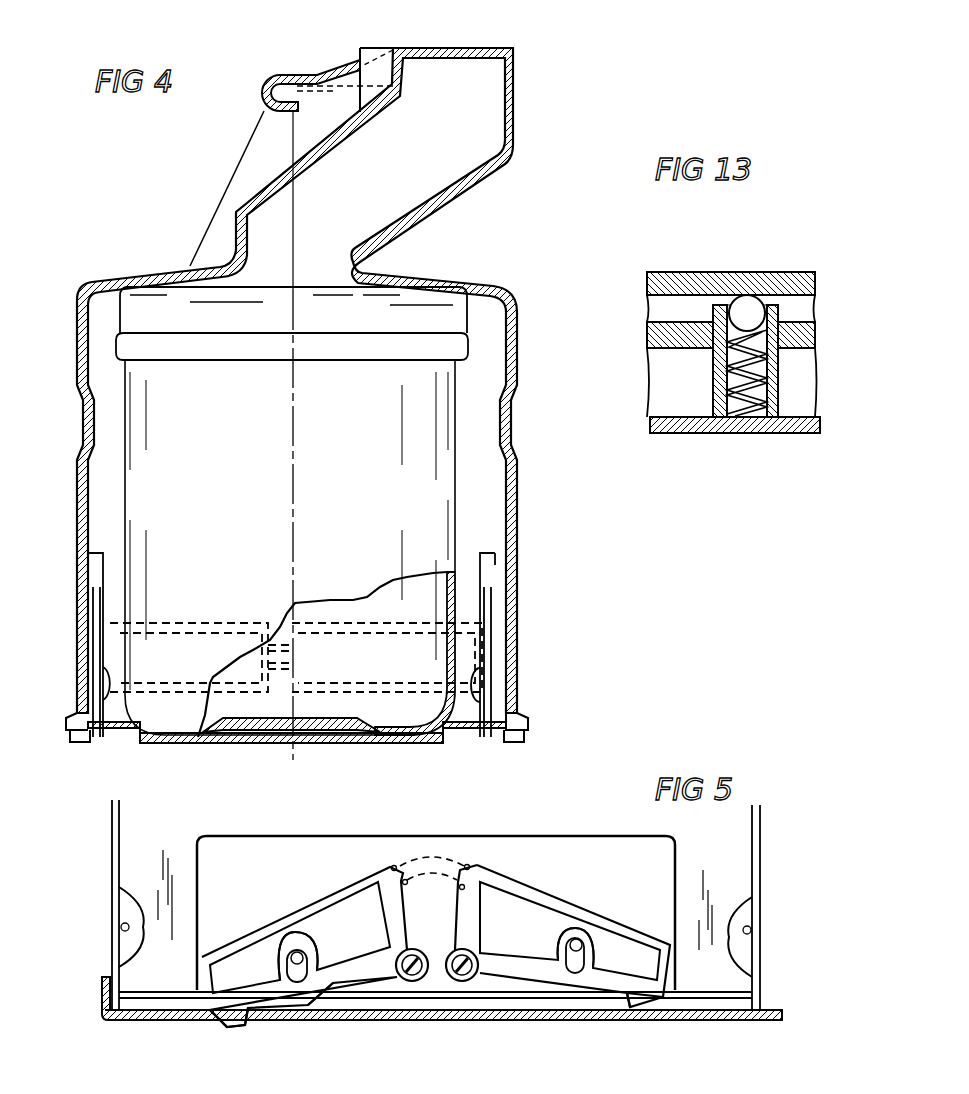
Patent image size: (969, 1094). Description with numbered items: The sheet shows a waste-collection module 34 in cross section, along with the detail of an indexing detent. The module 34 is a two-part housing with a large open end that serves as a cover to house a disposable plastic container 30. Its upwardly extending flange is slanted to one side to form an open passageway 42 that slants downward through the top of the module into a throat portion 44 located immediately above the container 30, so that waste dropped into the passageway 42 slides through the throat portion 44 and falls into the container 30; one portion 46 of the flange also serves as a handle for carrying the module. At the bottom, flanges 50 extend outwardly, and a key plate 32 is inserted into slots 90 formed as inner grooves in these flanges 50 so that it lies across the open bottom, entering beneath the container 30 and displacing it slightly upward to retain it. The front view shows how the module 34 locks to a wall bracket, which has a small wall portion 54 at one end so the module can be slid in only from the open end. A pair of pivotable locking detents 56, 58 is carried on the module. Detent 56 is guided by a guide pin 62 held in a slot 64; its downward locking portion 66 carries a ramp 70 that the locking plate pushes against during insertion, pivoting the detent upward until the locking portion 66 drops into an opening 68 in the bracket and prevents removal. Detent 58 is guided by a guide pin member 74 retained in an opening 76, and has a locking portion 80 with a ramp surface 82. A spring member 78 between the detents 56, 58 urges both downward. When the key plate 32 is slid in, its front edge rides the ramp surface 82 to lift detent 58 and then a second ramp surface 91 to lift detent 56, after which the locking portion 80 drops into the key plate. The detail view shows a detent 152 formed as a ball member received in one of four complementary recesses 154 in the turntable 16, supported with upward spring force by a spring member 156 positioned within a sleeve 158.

In FIG. 13, the turntable 16 is at (688, 280).
In FIG. 4, the plastic container 30 is at (455, 448).
In FIG. 4, the key plate 32 is at (258, 746).
In FIG. 4, the module 34 is at (505, 286).
In FIG. 5, the module 34 is at (762, 845).
In FIG. 4, the open passageway 42 is at (461, 62).
In FIG. 4, the throat portion 44 is at (270, 279).
In FIG. 4, the flange portion 46 is at (262, 105).
In FIG. 4, the flanges 50 is at (78, 718).
In FIG. 5, the wall portion 54 is at (100, 990).
In FIG. 5, the locking detent 56 is at (385, 878).
In FIG. 5, the locking detent 58 is at (485, 878).
In FIG. 5, the guide pin 62 is at (293, 950).
In FIG. 5, the slot 64 is at (273, 962).
In FIG. 5, the locking portion 66 is at (243, 1028).
In FIG. 5, the opening 68 is at (208, 1020).
In FIG. 5, the ramp 70 is at (225, 1027).
In FIG. 5, the guide pin member 74 is at (580, 950).
In FIG. 5, the opening 76 is at (560, 965).
In FIG. 5, the spring member 78 is at (455, 858).
In FIG. 5, the locking portion 80 is at (630, 1022).
In FIG. 5, the ramp surface 82 is at (648, 1005).
In FIG. 4, the slots 90 is at (80, 745).
In FIG. 5, the second ramp surface 91 is at (315, 1005).
In FIG. 13, the detent 152 is at (748, 305).
In FIG. 13, the complementary recesses 154 is at (728, 290).
In FIG. 13, the spring member 156 is at (775, 390).
In FIG. 13, the sleeve 158 is at (770, 343).